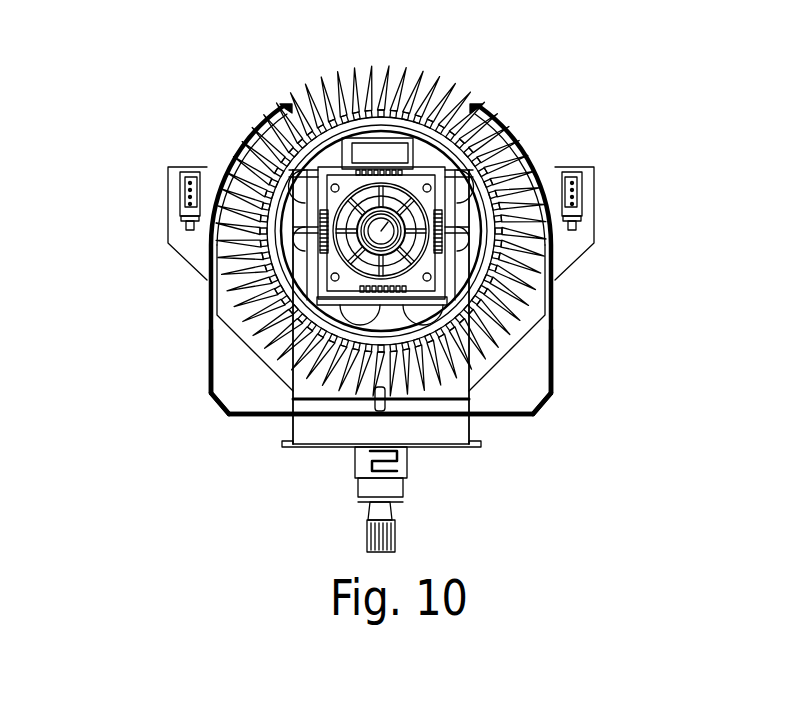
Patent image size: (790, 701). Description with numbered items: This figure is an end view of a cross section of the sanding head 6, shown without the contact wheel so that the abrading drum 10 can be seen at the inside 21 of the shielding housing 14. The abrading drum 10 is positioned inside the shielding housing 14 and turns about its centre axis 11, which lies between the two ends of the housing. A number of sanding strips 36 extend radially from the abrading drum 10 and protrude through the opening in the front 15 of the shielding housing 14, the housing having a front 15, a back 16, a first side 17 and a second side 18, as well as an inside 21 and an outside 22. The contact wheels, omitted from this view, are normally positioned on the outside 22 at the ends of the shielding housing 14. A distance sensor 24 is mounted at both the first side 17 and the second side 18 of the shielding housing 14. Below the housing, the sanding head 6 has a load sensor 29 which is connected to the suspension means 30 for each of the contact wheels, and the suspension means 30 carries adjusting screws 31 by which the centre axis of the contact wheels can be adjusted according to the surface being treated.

The sanding head 6 is at (190, 424).
The abrading drum 10 is at (433, 85).
The centre axis 11 is at (530, 158).
The shielding housing 14 is at (559, 379).
The front 15 is at (300, 80).
The back 16 is at (522, 417).
The first side 17 is at (207, 370).
The second side 18 is at (557, 346).
The inside 21 is at (533, 313).
The outside 22 is at (234, 432).
The distance sensor 24 is at (182, 190).
The load sensor 29 is at (368, 468).
The suspension means 30 is at (310, 432).
The adjusting screws 31 is at (395, 535).
The sanding strips 36 is at (393, 67).